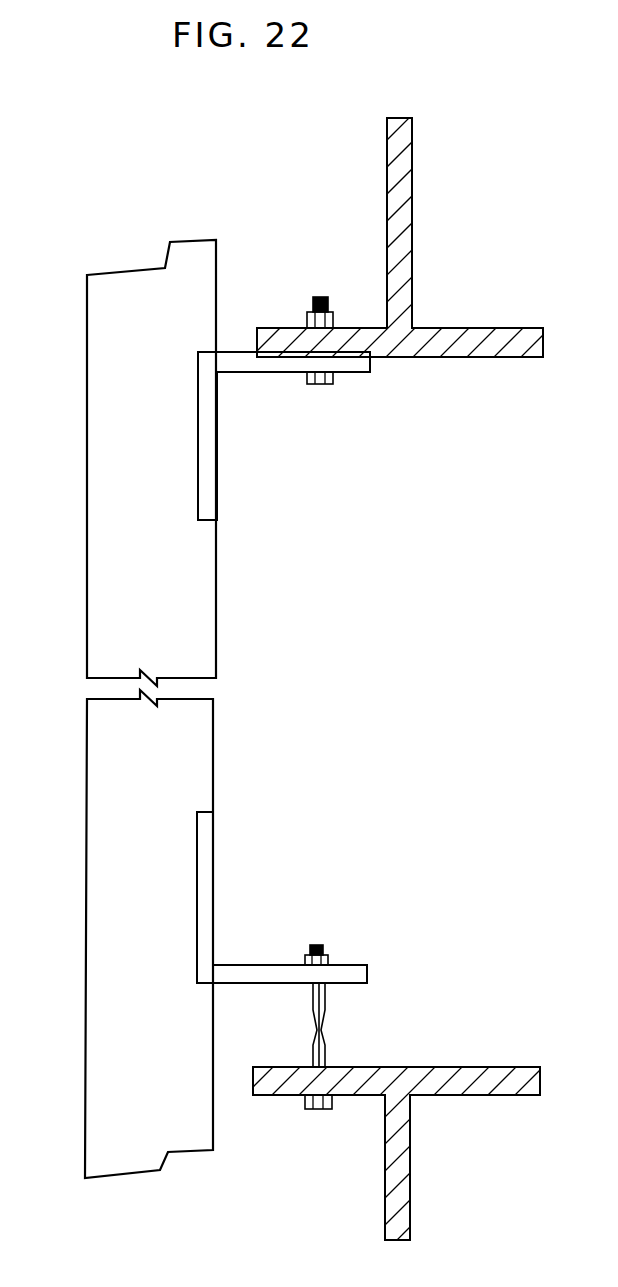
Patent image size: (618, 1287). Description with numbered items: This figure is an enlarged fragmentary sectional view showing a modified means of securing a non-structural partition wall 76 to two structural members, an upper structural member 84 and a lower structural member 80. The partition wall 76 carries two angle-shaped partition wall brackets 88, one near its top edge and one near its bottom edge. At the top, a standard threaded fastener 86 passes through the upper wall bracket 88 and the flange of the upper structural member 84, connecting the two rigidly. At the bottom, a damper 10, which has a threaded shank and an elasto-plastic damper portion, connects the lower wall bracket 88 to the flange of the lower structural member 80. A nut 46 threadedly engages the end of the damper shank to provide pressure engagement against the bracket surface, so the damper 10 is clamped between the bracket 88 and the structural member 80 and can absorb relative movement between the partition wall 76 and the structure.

The damper 10 is at (323, 1005).
The nut 46 is at (332, 963).
The partition wall 76 is at (86, 545).
The structural member 80 is at (528, 1066).
The structural member 84 is at (508, 332).
The threaded fastener 86 is at (318, 386).
The partition wall bracket 88 is at (214, 480).